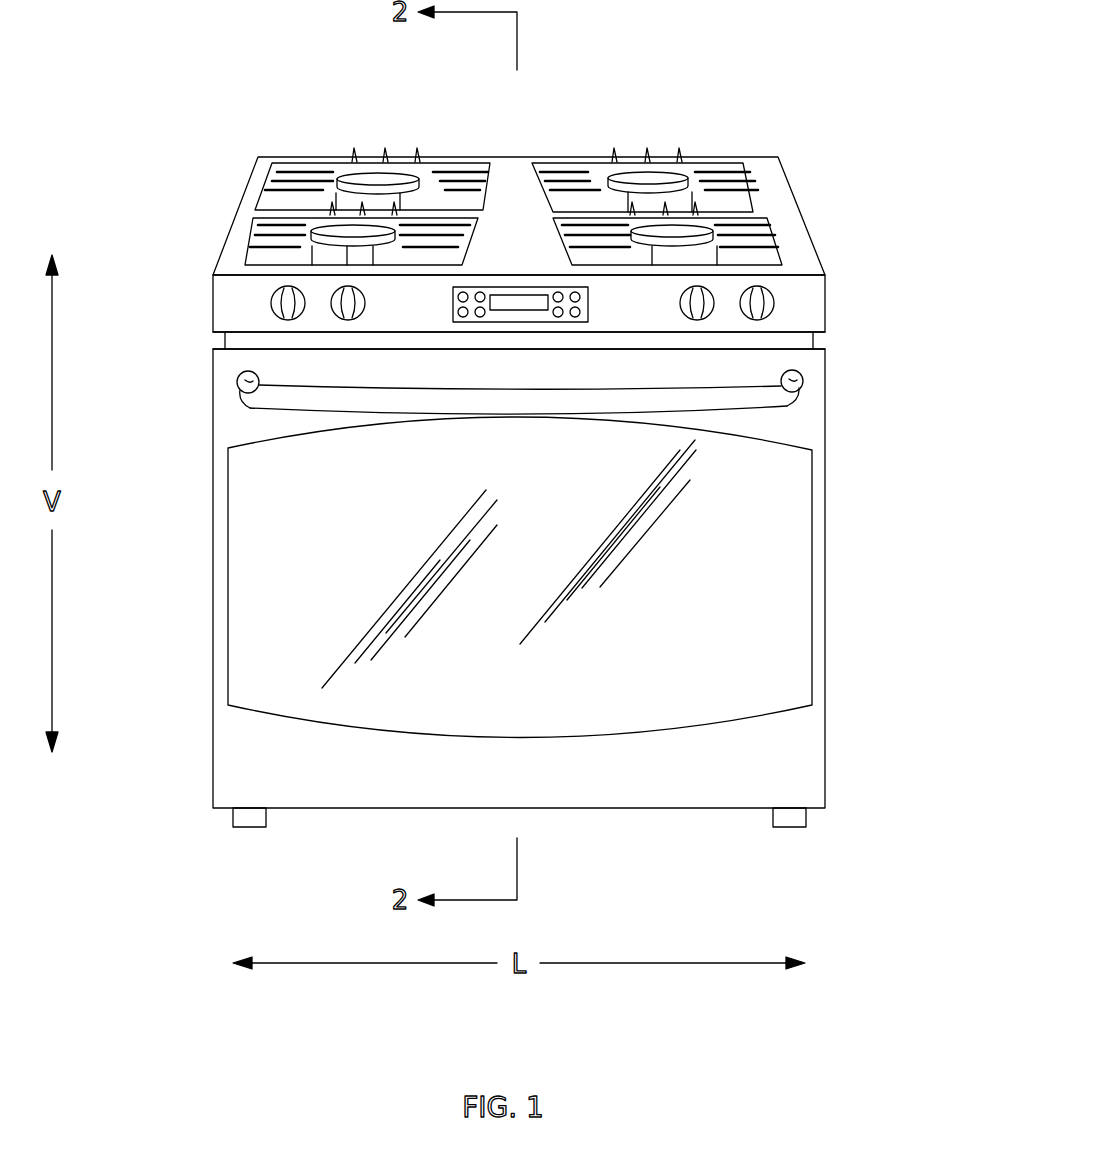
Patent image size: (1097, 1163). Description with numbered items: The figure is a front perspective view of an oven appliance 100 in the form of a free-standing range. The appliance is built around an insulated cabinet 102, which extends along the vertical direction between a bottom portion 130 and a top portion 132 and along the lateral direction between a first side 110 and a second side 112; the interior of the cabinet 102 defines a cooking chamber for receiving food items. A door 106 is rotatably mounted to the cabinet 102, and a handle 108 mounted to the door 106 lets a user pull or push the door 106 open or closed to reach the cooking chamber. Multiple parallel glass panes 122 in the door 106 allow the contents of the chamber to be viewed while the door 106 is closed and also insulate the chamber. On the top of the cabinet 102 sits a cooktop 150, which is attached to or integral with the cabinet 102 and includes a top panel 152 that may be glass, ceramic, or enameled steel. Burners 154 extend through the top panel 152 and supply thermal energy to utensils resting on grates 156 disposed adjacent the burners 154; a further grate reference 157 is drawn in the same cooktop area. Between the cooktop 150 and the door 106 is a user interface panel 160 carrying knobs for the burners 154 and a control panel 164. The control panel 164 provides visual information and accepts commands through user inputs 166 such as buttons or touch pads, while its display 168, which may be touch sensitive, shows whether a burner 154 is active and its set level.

The oven appliance 100 is at (875, 122).
The insulated cabinet 102 is at (250, 342).
The door 106 is at (812, 356).
The handle 108 is at (250, 403).
The first side 110 is at (230, 855).
The second side 112 is at (824, 860).
The glass panes 122 is at (778, 613).
The bottom portion 130 is at (870, 800).
The top portion 132 is at (875, 262).
The cooktop 150 is at (647, 105).
The top panel 152 is at (768, 172).
The burners 154 is at (367, 200).
The grates 156 is at (292, 195).
The grate 157 is at (291, 292).
The user interface panel 160 is at (805, 313).
The control panel 164 is at (470, 345).
The user inputs 166 is at (602, 303).
The display 168 is at (506, 286).